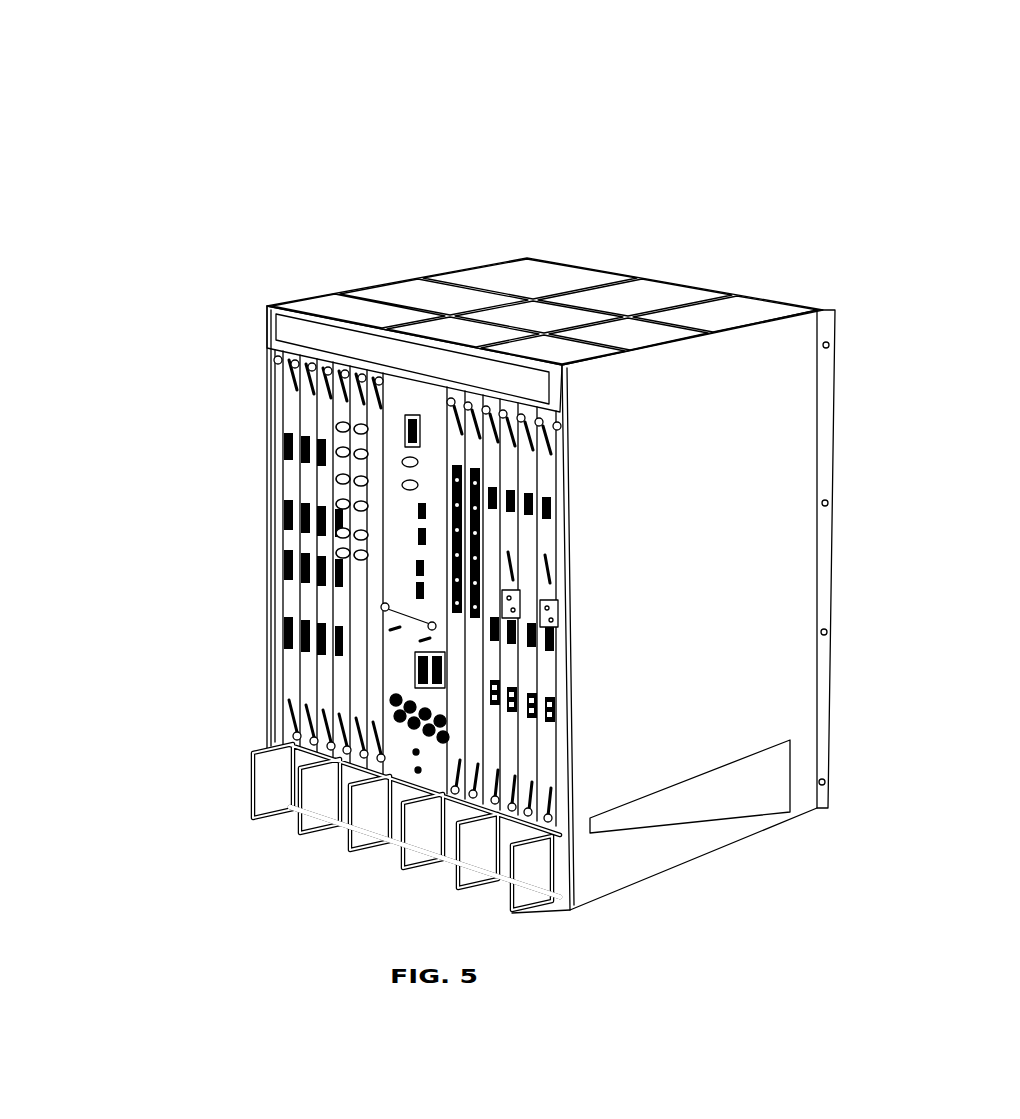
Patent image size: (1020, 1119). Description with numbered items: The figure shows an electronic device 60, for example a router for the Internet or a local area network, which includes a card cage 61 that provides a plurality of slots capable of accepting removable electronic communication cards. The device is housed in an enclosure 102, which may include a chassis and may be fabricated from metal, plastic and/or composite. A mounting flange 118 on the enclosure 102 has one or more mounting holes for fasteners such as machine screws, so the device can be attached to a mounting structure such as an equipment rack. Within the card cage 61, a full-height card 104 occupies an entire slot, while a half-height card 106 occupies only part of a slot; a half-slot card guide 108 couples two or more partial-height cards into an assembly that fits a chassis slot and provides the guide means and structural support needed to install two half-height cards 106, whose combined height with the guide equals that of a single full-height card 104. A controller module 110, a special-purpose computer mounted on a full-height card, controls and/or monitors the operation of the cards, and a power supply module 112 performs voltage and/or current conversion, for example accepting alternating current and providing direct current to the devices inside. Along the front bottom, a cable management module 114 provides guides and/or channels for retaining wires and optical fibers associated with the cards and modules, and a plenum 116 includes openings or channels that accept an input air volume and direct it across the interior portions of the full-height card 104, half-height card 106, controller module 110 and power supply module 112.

The electronic device 60 is at (245, 88).
The card cage 61 is at (188, 336).
The enclosure 102 is at (530, 298).
The full-height card 104 is at (302, 420).
The half-height card 106 is at (548, 542).
The half-slot card guide 108 is at (560, 619).
The controller module 110 is at (395, 542).
The power supply module 112 is at (412, 667).
The cable management module 114 is at (240, 782).
The plenum 116 is at (425, 813).
The mounting flange 118 is at (828, 310).